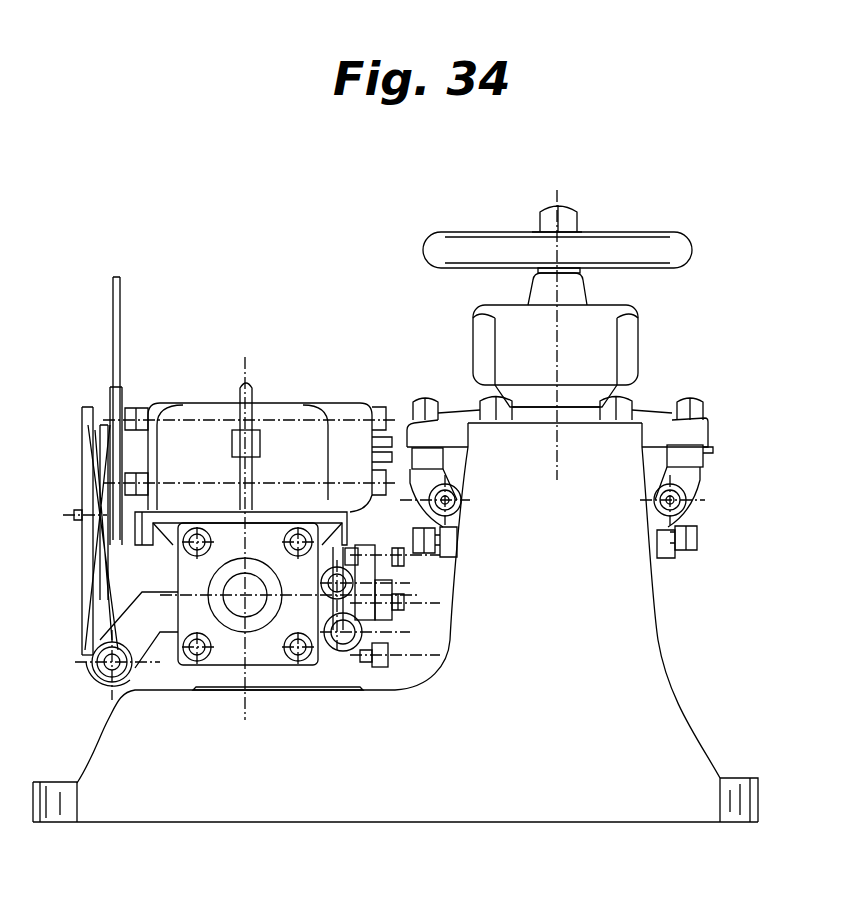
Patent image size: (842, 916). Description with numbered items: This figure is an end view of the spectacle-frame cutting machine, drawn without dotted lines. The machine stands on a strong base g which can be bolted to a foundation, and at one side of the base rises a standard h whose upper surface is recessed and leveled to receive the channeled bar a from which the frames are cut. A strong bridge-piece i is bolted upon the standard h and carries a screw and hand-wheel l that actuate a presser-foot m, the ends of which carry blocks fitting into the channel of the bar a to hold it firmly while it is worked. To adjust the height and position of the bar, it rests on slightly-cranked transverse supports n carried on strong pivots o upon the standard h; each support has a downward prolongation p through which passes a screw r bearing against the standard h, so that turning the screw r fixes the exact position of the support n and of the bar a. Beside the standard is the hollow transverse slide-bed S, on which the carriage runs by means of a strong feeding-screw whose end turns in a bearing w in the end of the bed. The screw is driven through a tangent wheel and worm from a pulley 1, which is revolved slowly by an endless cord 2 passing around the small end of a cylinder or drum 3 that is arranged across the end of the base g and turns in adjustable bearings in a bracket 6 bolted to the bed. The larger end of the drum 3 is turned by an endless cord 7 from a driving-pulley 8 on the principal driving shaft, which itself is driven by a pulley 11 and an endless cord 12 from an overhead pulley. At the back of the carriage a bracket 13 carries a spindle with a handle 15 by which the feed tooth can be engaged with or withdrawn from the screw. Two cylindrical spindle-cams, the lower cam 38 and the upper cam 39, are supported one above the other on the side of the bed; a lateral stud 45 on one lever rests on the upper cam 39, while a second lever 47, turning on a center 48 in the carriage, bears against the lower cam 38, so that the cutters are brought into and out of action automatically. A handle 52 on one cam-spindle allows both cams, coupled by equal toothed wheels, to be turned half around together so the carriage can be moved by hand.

The pulley 1 is at (82, 478).
The endless cord 2 is at (113, 598).
The cylinder or drum 3 is at (96, 668).
The bracket 6 is at (139, 630).
The endless cord 7 is at (86, 656).
The driving-pulley 8 is at (104, 422).
The pulley 11 is at (123, 398).
The endless cord 12 is at (128, 318).
The bracket 13 is at (258, 457).
The handle 15 is at (251, 395).
The lower cam 38 is at (335, 656).
The upper cam 39 is at (321, 583).
The lateral stud 45 is at (378, 550).
The second lever 47 is at (388, 645).
The center 48 is at (389, 592).
The handle 52 is at (358, 547).
The transverse slide-bed S is at (175, 522).
The bearing w is at (248, 594).
The channeled bar a is at (708, 452).
The base g is at (348, 744).
The standard h is at (557, 612).
The bridge-piece i is at (555, 340).
The hand-wheel l is at (631, 240).
The presser-foot m is at (557, 427).
The transverse support n is at (722, 482).
The pivot o is at (428, 500).
The downward prolongation p is at (676, 557).
The screw r is at (416, 555).